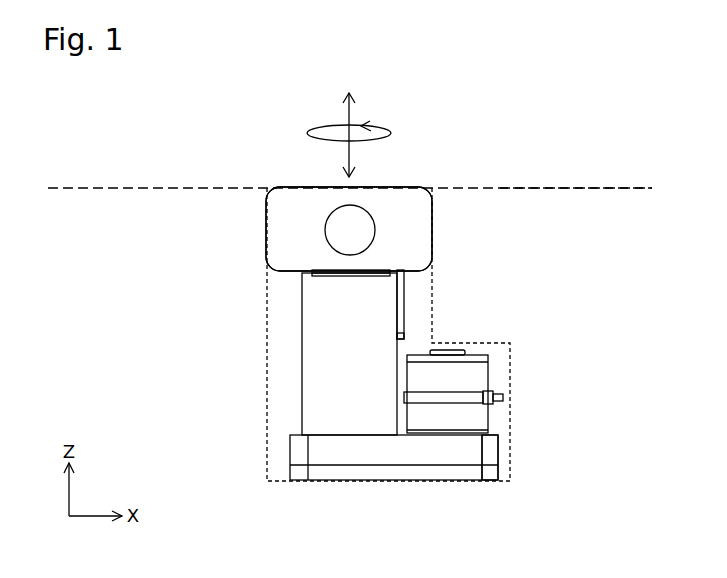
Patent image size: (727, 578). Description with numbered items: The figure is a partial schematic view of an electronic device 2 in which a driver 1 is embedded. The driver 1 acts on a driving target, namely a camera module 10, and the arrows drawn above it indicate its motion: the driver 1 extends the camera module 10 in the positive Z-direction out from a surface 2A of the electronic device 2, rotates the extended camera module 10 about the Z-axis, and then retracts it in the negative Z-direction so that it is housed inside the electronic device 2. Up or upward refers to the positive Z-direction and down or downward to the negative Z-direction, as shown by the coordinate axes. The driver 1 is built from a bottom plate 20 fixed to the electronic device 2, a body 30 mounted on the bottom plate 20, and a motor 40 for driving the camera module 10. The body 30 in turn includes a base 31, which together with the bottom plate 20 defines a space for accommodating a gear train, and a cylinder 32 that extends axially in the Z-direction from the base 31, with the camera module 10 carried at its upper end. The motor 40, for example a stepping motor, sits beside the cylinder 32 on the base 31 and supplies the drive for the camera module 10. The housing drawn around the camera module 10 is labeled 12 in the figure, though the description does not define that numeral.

The driver 1 is at (415, 168).
The electronic device 2 is at (177, 175).
The surface 2A is at (525, 187).
The camera module 10 is at (257, 232).
The housing 12 is at (422, 232).
The bottom plate 20 is at (441, 473).
The body 30 is at (288, 370).
The base 31 is at (498, 446).
The cylinder 32 is at (302, 320).
The motor 40 is at (487, 377).